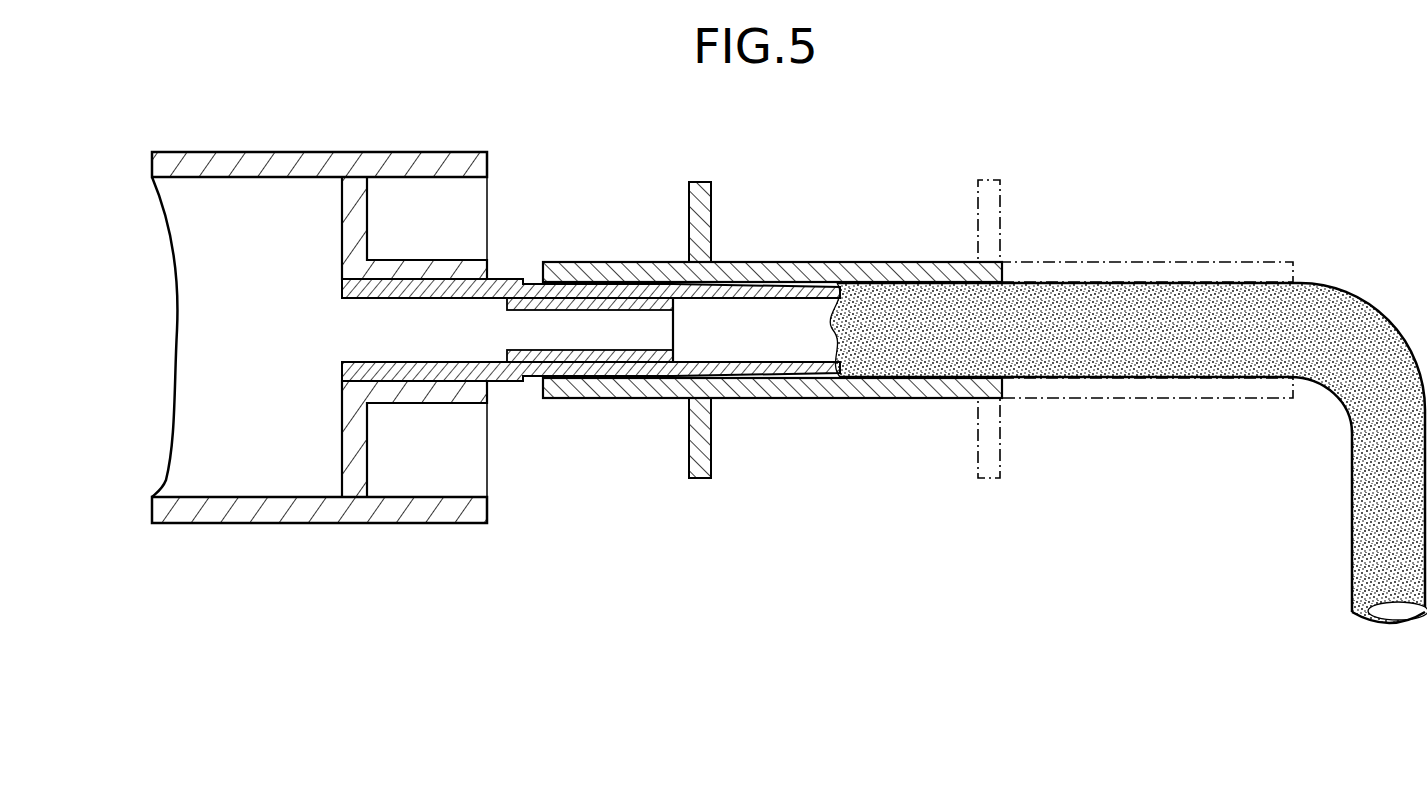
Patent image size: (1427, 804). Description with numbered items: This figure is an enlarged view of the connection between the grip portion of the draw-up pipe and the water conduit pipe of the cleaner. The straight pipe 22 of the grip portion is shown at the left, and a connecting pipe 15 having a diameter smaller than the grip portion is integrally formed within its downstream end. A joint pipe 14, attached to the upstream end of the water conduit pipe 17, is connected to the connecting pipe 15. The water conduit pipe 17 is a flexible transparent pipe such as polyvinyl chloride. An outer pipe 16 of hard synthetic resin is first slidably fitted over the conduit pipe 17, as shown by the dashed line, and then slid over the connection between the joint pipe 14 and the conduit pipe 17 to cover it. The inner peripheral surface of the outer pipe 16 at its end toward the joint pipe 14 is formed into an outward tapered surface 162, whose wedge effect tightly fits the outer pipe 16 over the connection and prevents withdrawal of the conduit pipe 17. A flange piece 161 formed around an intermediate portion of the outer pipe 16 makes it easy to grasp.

The straight pipe 22 is at (323, 157).
The connecting pipe 15 is at (413, 267).
The joint pipe 14 is at (513, 280).
The outer pipe 16 is at (770, 394).
The flange piece 161 is at (700, 182).
The tapered surface 162 is at (608, 372).
The water conduit pipe 17 is at (1368, 470).